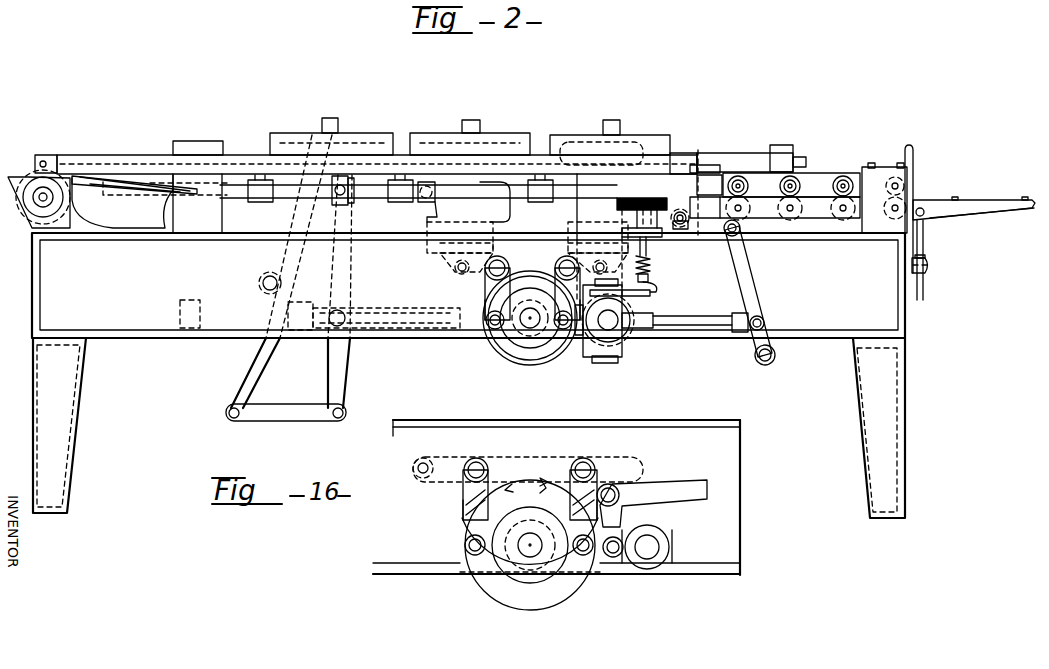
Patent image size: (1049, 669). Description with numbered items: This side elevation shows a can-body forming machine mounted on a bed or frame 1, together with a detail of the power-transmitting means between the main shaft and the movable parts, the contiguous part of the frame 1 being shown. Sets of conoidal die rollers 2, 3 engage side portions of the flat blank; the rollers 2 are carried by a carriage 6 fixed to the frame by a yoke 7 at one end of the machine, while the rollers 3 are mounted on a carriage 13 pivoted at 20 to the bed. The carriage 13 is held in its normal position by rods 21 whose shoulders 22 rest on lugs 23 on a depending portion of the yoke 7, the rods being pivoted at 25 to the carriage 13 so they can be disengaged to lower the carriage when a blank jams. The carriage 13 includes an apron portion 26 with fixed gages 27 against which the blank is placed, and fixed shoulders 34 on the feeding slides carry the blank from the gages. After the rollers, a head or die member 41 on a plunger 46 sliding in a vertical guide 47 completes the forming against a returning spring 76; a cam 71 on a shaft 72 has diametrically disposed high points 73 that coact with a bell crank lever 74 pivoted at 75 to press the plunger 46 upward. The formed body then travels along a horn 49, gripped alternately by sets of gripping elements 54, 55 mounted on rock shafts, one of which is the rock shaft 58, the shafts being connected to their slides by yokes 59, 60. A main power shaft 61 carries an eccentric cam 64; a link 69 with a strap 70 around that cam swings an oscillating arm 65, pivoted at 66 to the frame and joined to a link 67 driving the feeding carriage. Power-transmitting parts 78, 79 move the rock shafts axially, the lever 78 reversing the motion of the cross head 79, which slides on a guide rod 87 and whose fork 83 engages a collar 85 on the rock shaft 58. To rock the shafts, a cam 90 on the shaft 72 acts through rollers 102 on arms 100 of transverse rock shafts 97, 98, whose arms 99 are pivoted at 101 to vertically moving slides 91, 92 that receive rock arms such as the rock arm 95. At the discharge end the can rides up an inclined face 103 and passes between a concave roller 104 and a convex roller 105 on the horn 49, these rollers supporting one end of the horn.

In FIG. 2, the frame 1 is at (468, 375).
In FIG. 16, the frame 1 is at (386, 541).
In FIG. 2, the rollers 2 is at (800, 178).
In FIG. 2, the rollers 3 is at (790, 212).
In FIG. 2, the carriage 6 is at (822, 178).
In FIG. 2, the yoke 7 is at (893, 176).
In FIG. 2, the carriage 13 is at (978, 210).
In FIG. 2, the pivot 20 is at (682, 226).
In FIG. 2, the rods 21 is at (925, 296).
In FIG. 2, the shoulders 22 is at (926, 257).
In FIG. 2, the lugs 23 is at (931, 268).
In FIG. 2, the pivot 25 is at (924, 209).
In FIG. 2, the apron portion 26 is at (998, 198).
In FIG. 2, the gages 27 is at (1026, 197).
In FIG. 2, the shoulders 34 is at (957, 198).
In FIG. 2, the die member 41 is at (617, 204).
In FIG. 2, the plunger 46 is at (658, 288).
In FIG. 2, the vertical guide 47 is at (650, 260).
In FIG. 2, the horn 49 is at (143, 156).
In FIG. 2, the gripping elements 54 is at (430, 140).
In FIG. 2, the gripping elements 55 is at (250, 141).
In FIG. 2, the rock shaft 58 is at (238, 192).
In FIG. 2, the yoke 59 is at (785, 147).
In FIG. 2, the yoke 60 is at (712, 153).
In FIG. 2, the main power shaft 61 is at (625, 338).
In FIG. 2, the eccentric cam 64 is at (618, 348).
In FIG. 2, the oscillating arm 65 is at (750, 281).
In FIG. 2, the pivot 66 is at (776, 358).
In FIG. 2, the link 67 is at (742, 232).
In FIG. 2, the link 69 is at (700, 318).
In FIG. 2, the strap 70 is at (612, 345).
In FIG. 2, the cam 71 is at (540, 366).
In FIG. 16, the cam 71 is at (490, 590).
In FIG. 2, the shaft 72 is at (525, 325).
In FIG. 16, the shaft 72 is at (525, 548).
In FIG. 16, the high points 73 is at (455, 543).
In FIG. 2, the bell crank lever 74 is at (652, 295).
In FIG. 16, the bell crank lever 74 is at (660, 490).
In FIG. 16, the pivot 75 is at (614, 490).
In FIG. 2, the returning spring 76 is at (650, 277).
In FIG. 2, the power-transmitting part 78 is at (243, 360).
In FIG. 2, the power-transmitting part 79 is at (333, 362).
In FIG. 2, the fork 83 is at (335, 195).
In FIG. 2, the collar 85 is at (350, 196).
In FIG. 2, the guide rod 87 is at (394, 328).
In FIG. 2, the cam 90 is at (530, 345).
In FIG. 16, the cam 90 is at (542, 580).
In FIG. 2, the slide 91 is at (545, 203).
In FIG. 2, the slide 92 is at (427, 214).
In FIG. 2, the rock arm 95 is at (436, 200).
In FIG. 2, the rock shaft 97 is at (503, 265).
In FIG. 16, the rock shaft 97 is at (478, 472).
In FIG. 2, the rock shaft 98 is at (562, 266).
In FIG. 16, the rock shaft 98 is at (583, 470).
In FIG. 2, the arm 99 is at (470, 280).
In FIG. 16, the arm 99 is at (605, 457).
In FIG. 2, the arm 100 is at (490, 290).
In FIG. 16, the arm 100 is at (566, 480).
In FIG. 2, the pivot 101 is at (445, 268).
In FIG. 2, the roller 102 is at (487, 328).
In FIG. 16, the roller 102 is at (468, 537).
In FIG. 2, the inclined face 103 is at (157, 192).
In FIG. 2, the concave roller 104 is at (55, 200).
In FIG. 2, the convex roller 105 is at (36, 163).